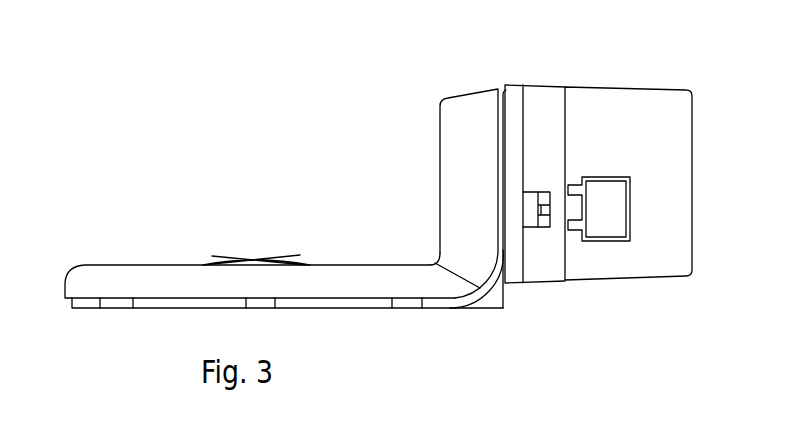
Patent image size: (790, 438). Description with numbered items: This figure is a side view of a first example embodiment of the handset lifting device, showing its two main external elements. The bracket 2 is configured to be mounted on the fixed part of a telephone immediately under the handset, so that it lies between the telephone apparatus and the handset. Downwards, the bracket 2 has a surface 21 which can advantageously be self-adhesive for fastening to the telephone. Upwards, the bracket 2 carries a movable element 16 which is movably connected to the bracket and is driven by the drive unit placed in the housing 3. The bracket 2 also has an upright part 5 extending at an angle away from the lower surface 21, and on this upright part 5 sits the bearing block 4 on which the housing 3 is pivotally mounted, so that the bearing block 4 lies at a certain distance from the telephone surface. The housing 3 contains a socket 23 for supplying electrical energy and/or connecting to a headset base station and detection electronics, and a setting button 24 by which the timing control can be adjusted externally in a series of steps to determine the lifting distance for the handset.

The bracket 2 is at (145, 226).
The housing 3 is at (623, 103).
The bearing block 4 is at (496, 71).
The upright part 5 is at (412, 116).
The movable element 16 is at (281, 226).
The surface 21 is at (147, 310).
The socket 23 is at (613, 225).
The setting button 24 is at (533, 222).